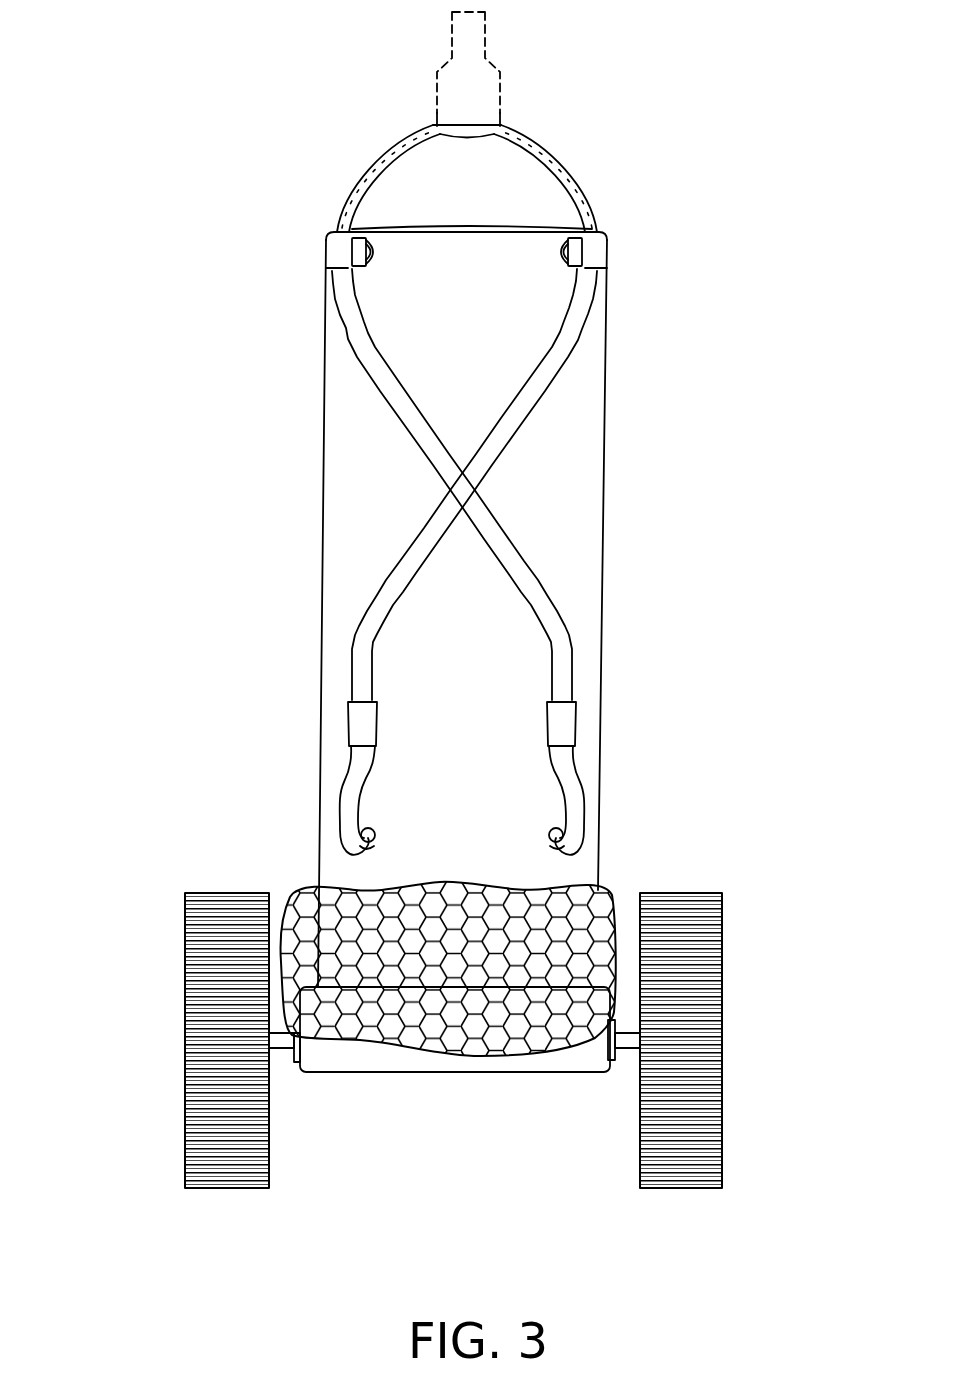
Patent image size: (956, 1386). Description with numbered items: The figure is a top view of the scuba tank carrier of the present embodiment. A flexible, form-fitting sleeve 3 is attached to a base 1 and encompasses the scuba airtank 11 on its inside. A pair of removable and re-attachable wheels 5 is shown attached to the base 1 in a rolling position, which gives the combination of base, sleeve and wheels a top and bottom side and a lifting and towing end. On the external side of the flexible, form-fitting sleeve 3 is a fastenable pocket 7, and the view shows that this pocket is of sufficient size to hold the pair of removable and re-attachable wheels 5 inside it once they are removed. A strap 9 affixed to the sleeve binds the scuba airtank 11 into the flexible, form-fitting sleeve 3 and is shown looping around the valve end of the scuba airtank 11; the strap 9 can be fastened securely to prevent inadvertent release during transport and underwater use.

The base 1 is at (380, 1073).
The flexible, form-fitting sleeve 3 is at (325, 392).
The removable and re-attachable wheels 5 is at (185, 1032).
The fastenable pocket 7 is at (294, 897).
The strap 9 is at (396, 366).
The scuba airtank 11 is at (437, 72).